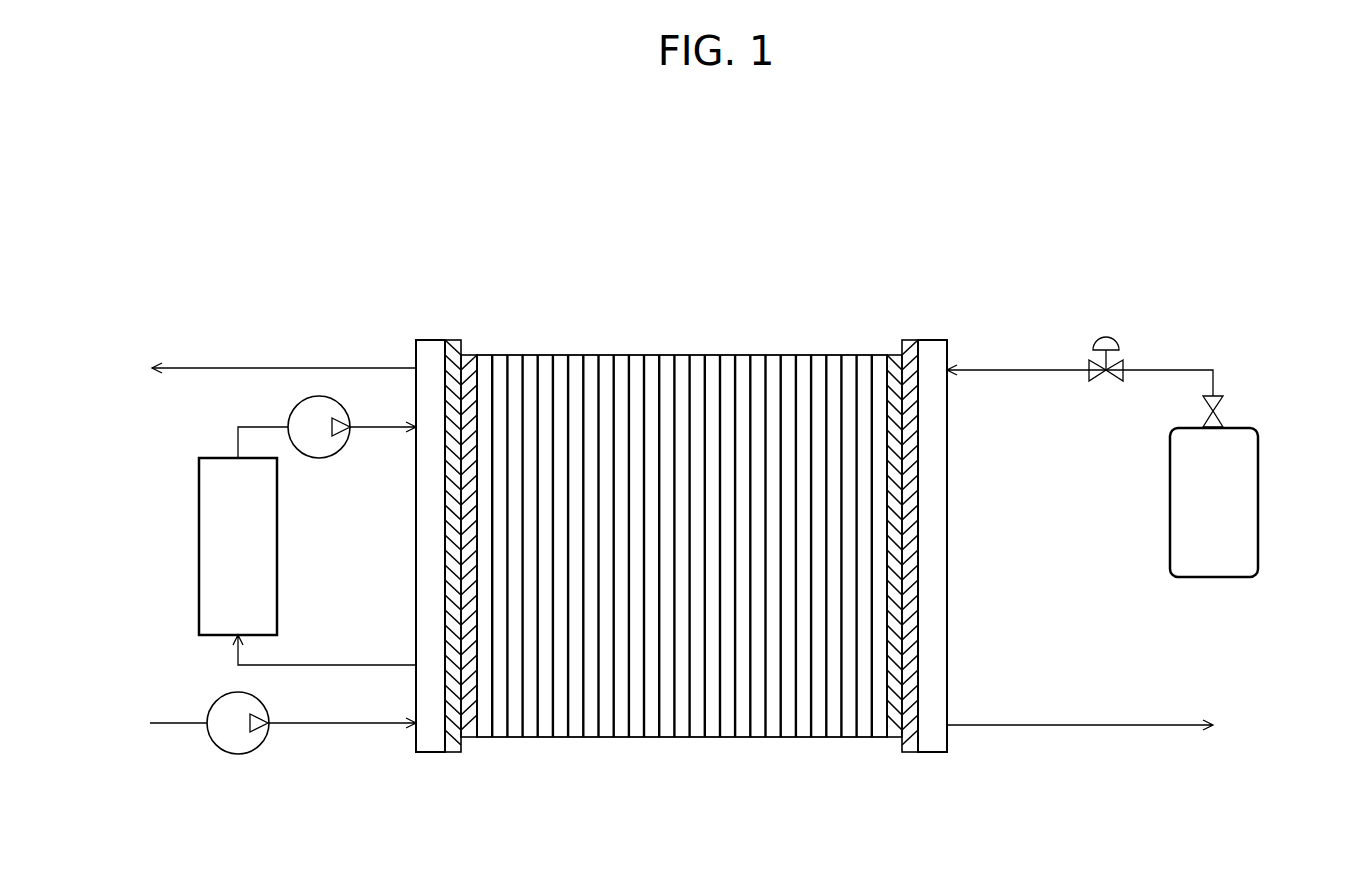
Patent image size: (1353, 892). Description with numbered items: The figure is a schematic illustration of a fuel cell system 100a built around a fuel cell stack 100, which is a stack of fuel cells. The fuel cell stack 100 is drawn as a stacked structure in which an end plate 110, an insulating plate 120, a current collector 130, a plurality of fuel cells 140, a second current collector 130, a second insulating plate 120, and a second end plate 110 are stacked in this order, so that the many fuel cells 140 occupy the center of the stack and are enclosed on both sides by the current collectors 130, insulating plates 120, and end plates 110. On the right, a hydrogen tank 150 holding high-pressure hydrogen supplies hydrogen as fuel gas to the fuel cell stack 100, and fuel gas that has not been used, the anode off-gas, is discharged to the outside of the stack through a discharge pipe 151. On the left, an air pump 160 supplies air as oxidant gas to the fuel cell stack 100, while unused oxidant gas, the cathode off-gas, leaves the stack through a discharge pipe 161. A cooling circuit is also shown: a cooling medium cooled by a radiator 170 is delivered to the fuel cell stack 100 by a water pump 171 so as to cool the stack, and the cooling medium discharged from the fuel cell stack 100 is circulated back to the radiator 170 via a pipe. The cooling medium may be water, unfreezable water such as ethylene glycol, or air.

The fuel cell system 100a is at (268, 208).
The fuel cell stack 100 is at (993, 261).
The end plate 110 is at (431, 340).
The insulating plate 120 is at (453, 340).
The current collector 130 is at (470, 355).
The fuel cells 140 is at (630, 355).
The hydrogen tank 150 is at (1258, 458).
The discharge pipe 151 is at (1080, 725).
The air pump 160 is at (238, 755).
The discharge pipe 161 is at (260, 368).
The radiator 170 is at (199, 490).
The water pump 171 is at (319, 458).